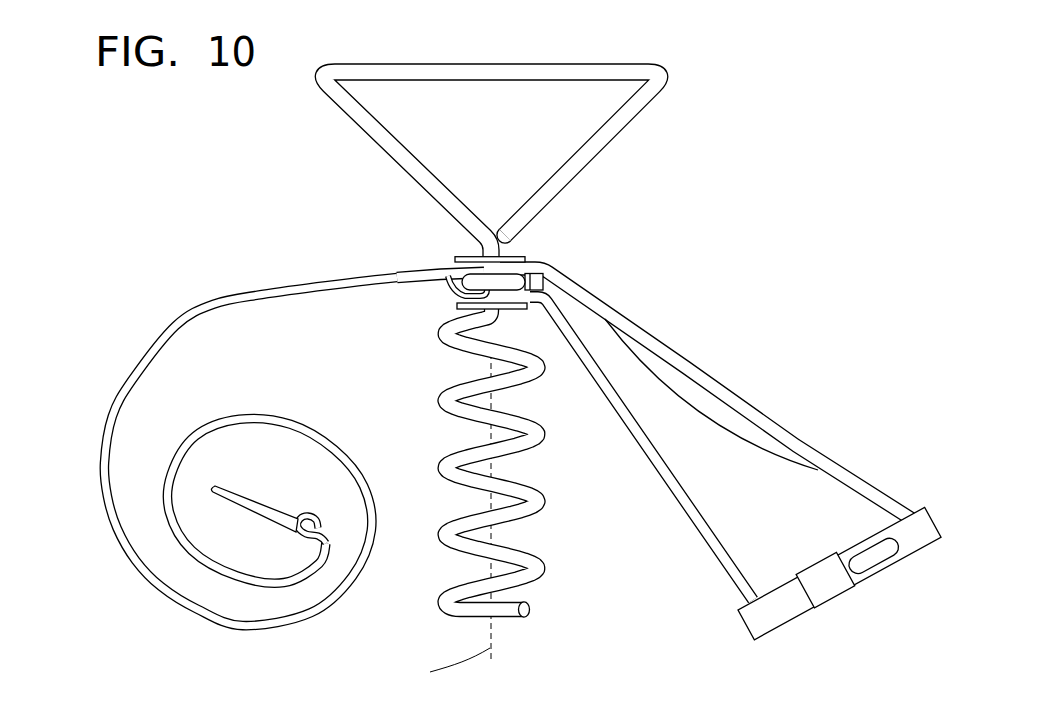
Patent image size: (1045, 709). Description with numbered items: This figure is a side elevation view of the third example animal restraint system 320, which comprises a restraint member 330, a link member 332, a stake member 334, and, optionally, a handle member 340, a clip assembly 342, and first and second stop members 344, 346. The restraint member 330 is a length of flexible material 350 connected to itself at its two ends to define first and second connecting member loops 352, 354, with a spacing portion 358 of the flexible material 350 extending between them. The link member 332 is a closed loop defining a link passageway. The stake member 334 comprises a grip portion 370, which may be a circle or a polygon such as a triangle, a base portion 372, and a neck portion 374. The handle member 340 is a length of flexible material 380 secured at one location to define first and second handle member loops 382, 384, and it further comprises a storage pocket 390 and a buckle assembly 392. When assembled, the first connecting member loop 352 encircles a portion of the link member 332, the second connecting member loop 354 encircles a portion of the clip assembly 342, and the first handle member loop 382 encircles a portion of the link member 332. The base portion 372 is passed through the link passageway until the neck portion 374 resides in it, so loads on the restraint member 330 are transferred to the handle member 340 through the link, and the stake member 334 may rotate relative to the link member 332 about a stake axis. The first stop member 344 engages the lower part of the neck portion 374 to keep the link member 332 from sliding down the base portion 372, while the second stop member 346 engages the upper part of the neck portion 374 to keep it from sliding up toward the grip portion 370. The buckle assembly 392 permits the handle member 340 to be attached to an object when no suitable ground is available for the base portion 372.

The animal restraint system 320 is at (486, 348).
The restraint member 330 is at (257, 449).
The link member 332 is at (470, 276).
The stake member 334 is at (529, 135).
The handle member 340 is at (721, 457).
The clip assembly 342 is at (248, 502).
The first stop member 344 is at (457, 308).
The second stop member 346 is at (458, 257).
The flexible material 350 is at (257, 449).
The first connecting member loop 352 is at (452, 290).
The second connecting member loop 354 is at (320, 522).
The spacing portion 358 is at (129, 380).
The grip portion 370 is at (497, 70).
The base portion 372 is at (554, 457).
The neck portion 374 is at (493, 320).
The flexible material 380 is at (708, 396).
The first handle member loop 382 is at (527, 270).
The second handle member loop 384 is at (697, 520).
The storage pocket 390 is at (697, 402).
The buckle assembly 392 is at (830, 590).